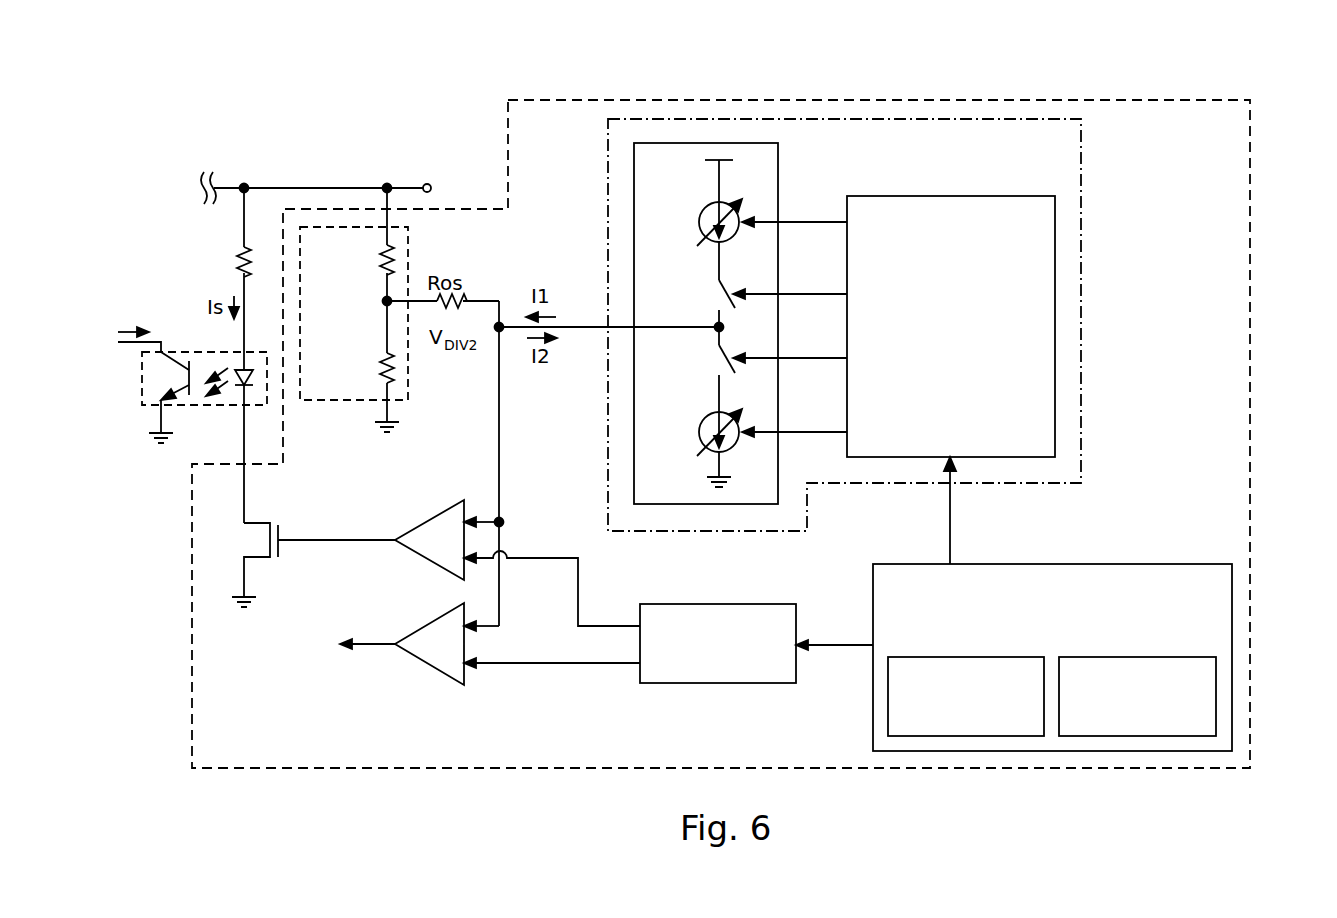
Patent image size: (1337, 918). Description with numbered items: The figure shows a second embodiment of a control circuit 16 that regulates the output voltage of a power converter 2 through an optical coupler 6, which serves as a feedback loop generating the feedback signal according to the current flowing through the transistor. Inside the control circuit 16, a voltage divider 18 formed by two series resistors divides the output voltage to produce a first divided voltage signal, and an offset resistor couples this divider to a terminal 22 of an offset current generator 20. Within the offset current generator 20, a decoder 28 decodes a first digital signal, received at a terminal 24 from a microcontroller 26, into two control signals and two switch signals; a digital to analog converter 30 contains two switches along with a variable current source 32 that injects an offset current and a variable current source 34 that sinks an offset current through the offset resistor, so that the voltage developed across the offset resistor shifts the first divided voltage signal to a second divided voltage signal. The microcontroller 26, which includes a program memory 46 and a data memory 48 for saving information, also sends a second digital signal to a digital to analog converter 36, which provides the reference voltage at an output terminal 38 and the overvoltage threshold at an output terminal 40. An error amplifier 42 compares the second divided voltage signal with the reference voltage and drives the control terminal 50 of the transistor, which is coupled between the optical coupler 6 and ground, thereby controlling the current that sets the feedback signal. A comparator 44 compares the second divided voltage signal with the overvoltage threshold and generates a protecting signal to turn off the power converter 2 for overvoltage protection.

The power converter 2 is at (276, 130).
The optical coupler 6 is at (207, 352).
The control circuit 16 is at (1250, 170).
The voltage divider 18 is at (340, 401).
The offset current generator 20 is at (1081, 170).
The terminal 22 is at (607, 327).
The terminal 24 is at (955, 485).
The microcontroller 26 is at (1232, 564).
The decoder 28 is at (948, 196).
The digital to analog converter 30 is at (778, 168).
The variable current source 32 is at (700, 213).
The variable current source 34 is at (702, 422).
The digital to analog converter 36 is at (712, 604).
The output terminal 38 is at (640, 622).
The output terminal 40 is at (640, 670).
The error amplifier 42 is at (425, 518).
The comparator 44 is at (432, 612).
The program memory 46 is at (930, 657).
The data memory 48 is at (1172, 657).
The control terminal 50 is at (283, 535).